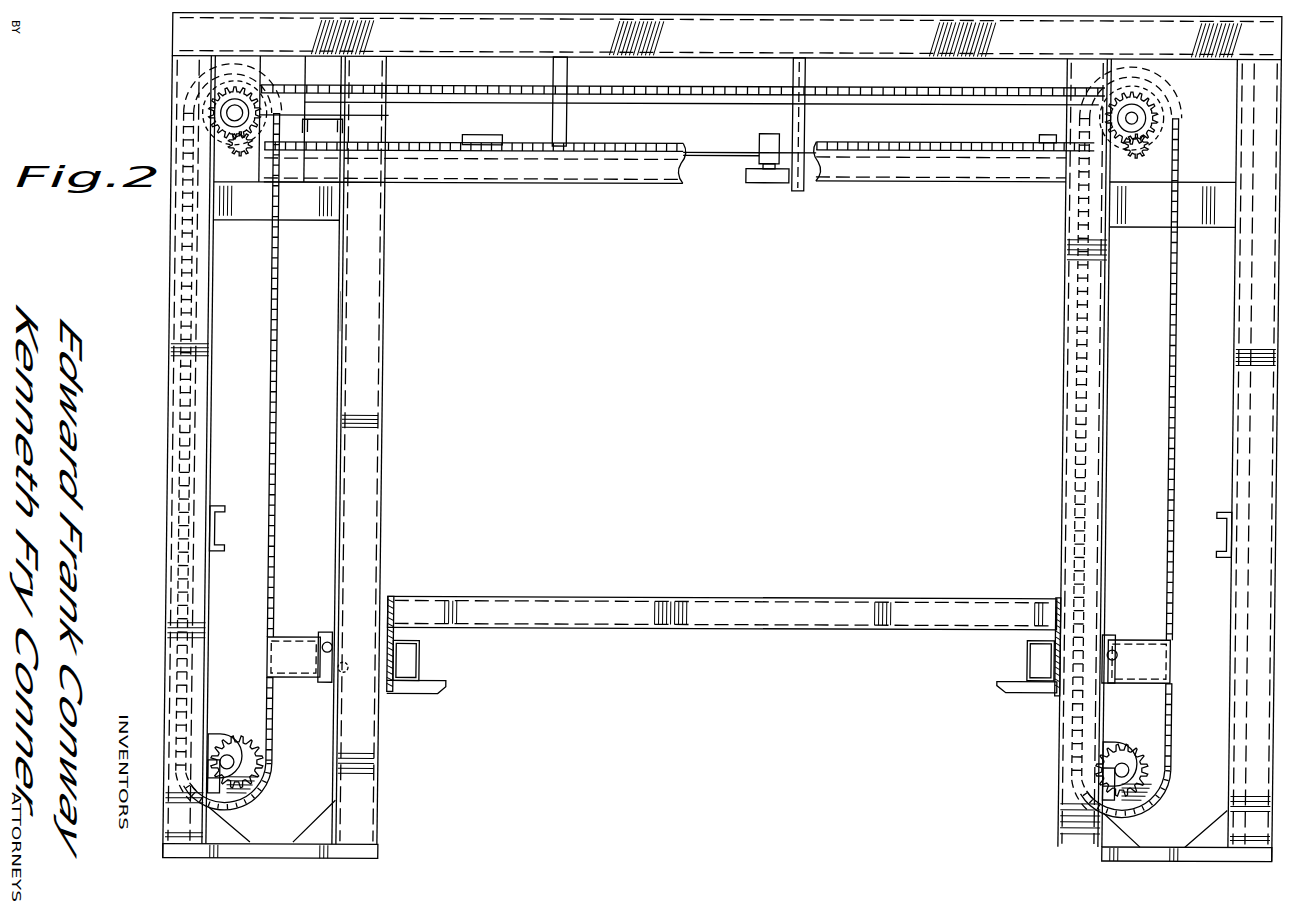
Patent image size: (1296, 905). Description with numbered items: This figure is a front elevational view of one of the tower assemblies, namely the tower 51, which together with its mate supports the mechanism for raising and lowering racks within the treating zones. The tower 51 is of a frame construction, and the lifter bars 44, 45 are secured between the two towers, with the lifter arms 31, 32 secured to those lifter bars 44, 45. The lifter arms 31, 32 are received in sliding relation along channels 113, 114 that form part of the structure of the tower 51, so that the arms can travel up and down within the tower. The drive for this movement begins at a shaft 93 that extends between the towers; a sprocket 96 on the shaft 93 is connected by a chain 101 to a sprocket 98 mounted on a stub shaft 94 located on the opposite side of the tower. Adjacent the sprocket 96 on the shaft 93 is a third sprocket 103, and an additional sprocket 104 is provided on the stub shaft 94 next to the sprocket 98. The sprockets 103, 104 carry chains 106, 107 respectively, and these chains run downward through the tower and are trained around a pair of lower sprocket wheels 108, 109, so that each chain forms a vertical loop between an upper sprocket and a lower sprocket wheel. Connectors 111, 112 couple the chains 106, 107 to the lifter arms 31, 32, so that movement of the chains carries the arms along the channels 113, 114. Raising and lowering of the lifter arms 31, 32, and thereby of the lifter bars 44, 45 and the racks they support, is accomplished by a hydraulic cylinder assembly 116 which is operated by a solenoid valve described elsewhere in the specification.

The lifter arm 31 is at (433, 680).
The lifter arm 32 is at (1012, 688).
The lifter bar 44 is at (426, 639).
The lifter bar 45 is at (1033, 656).
The tower 51 is at (396, 341).
The shaft 93 is at (235, 111).
The stub shaft 94 is at (1135, 114).
The sprocket 96 is at (234, 141).
The sprocket 98 is at (1150, 143).
The chain 101 is at (700, 94).
The sprocket 103 is at (200, 84).
The sprocket 104 is at (1165, 93).
The chain 106 is at (279, 407).
The chain 107 is at (1173, 441).
The lower sprocket wheel 108 is at (262, 757).
The lower sprocket wheel 109 is at (1150, 742).
The connector 111 is at (292, 642).
The connector 112 is at (1137, 636).
The channel 113 is at (387, 311).
The channel 114 is at (1076, 296).
The hydraulic cylinder assembly 116 is at (739, 144).